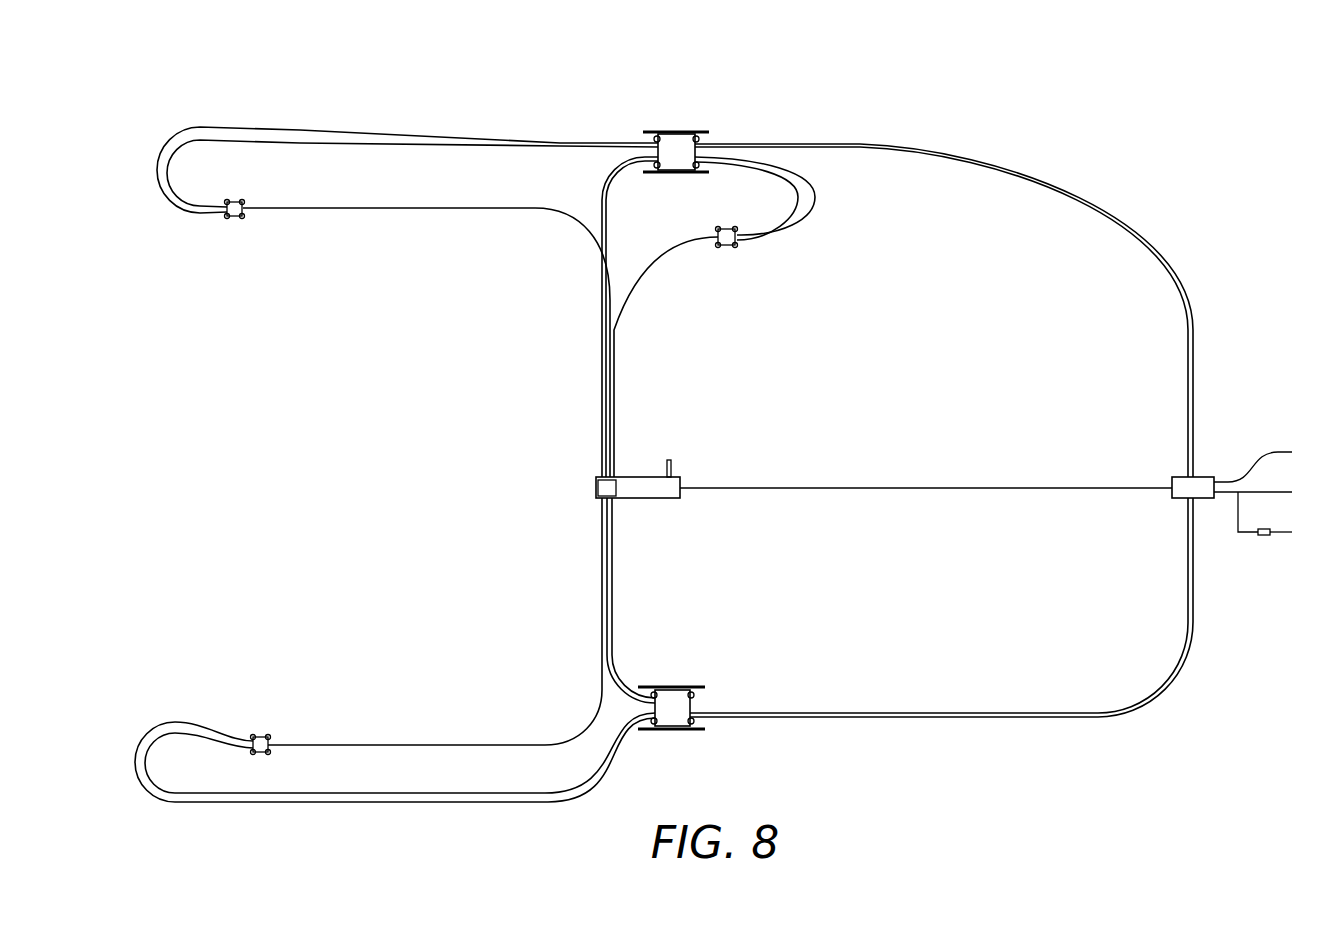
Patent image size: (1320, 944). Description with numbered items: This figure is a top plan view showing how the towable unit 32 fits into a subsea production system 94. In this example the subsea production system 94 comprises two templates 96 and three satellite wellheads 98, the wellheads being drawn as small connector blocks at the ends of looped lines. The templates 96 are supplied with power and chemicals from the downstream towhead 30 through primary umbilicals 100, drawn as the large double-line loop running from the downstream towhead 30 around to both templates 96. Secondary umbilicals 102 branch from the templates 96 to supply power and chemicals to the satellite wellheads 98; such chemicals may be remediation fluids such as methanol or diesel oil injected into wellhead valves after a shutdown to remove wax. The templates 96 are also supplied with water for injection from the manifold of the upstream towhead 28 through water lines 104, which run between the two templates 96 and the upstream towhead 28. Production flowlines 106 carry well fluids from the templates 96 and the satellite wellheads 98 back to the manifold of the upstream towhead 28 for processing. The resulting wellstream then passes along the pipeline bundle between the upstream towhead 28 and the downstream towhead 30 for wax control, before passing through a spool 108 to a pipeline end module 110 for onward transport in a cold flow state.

The subsea production system 94 is at (193, 84).
The template 96 is at (680, 130).
The satellite wellhead 98 is at (235, 200).
The primary umbilical 100 is at (893, 143).
The secondary umbilical 102 is at (356, 130).
The water line 104 is at (608, 203).
The production flowline 106 is at (612, 213).
The upstream towhead 28 is at (640, 477).
The downstream towhead 30 is at (1178, 477).
The towable unit 32 is at (1038, 452).
The spool 108 is at (1242, 504).
The pipeline end module 110 is at (1262, 538).